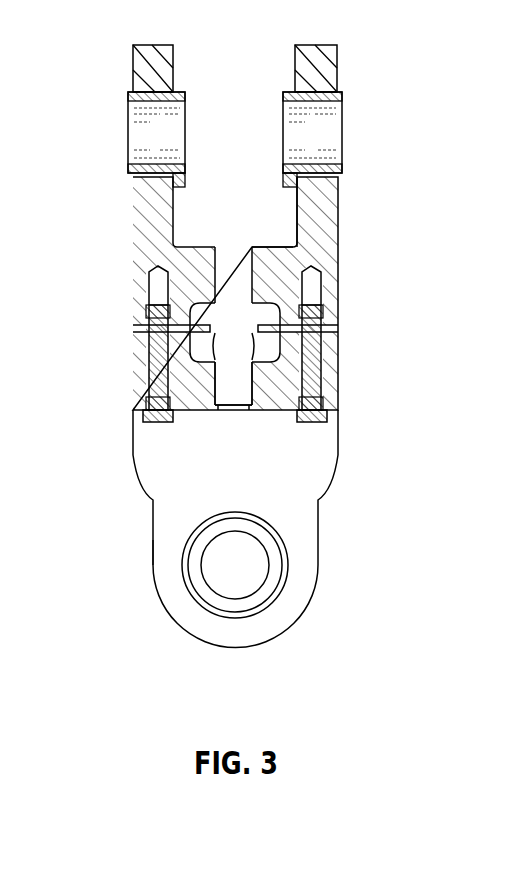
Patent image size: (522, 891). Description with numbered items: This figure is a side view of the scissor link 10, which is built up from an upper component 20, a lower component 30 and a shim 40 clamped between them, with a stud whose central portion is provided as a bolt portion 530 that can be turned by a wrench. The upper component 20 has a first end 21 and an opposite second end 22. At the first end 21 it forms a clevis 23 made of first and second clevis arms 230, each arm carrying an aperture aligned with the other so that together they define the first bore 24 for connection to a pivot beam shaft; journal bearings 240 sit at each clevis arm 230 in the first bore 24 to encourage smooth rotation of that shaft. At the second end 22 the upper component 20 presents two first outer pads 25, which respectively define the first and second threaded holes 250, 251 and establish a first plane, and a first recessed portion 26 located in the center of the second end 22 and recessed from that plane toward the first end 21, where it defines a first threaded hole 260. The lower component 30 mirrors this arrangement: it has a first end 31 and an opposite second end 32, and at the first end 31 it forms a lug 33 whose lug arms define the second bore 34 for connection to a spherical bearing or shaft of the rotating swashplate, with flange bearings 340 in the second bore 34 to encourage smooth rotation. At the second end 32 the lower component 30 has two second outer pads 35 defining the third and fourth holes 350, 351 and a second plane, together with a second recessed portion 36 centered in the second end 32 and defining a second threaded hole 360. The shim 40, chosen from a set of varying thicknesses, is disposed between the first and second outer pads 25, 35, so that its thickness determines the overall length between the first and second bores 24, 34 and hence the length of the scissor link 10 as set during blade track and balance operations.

The scissor link 10 is at (112, 285).
The upper component 20 is at (133, 213).
The first end 21 is at (133, 68).
The second end 22 is at (338, 272).
The clevis 23 is at (337, 68).
The first bore 24 is at (128, 133).
The first outer pads 25 is at (333, 320).
The first recessed portion 26 is at (212, 292).
The lower component 30 is at (133, 455).
The first end 31 is at (165, 605).
The second end 32 is at (133, 368).
The lug 33 is at (300, 590).
The second bore 34 is at (237, 582).
The second outer pads 35 is at (333, 375).
The second recessed portion 36 is at (272, 395).
The shim 40 is at (133, 335).
The clevis arms 230 is at (295, 62).
The journal bearings 240 is at (302, 135).
The first threaded hole 250 is at (320, 318).
The second threaded hole 251 is at (148, 318).
The first threaded hole 260 is at (270, 267).
The flange bearings 340 is at (235, 560).
The third hole 350 is at (338, 407).
The fourth hole 351 is at (150, 395).
The second threaded hole 360 is at (213, 395).
The bolt portion 530 is at (245, 352).